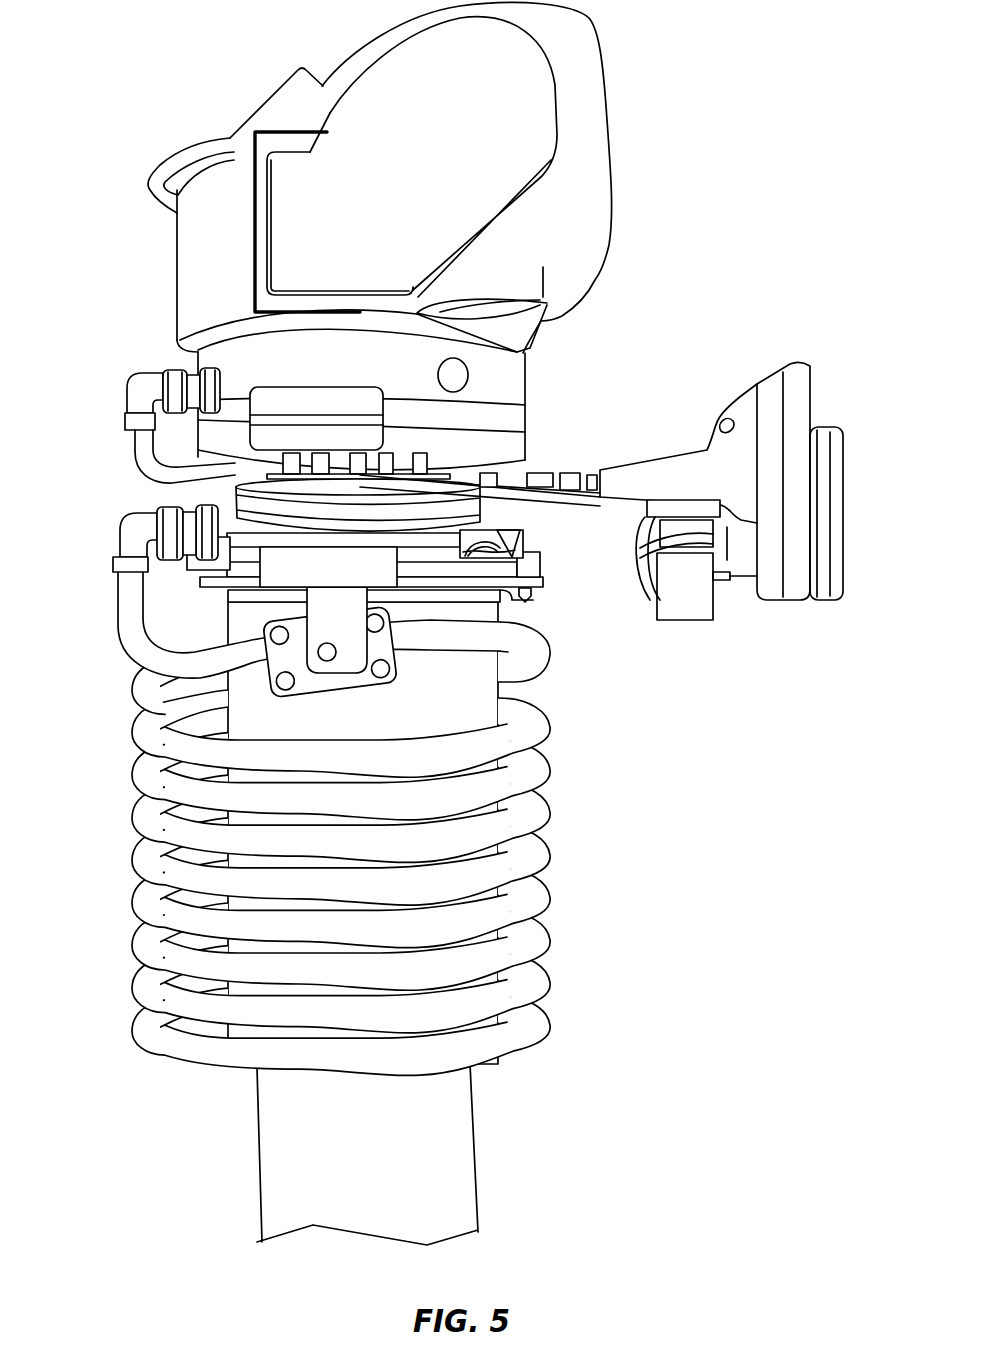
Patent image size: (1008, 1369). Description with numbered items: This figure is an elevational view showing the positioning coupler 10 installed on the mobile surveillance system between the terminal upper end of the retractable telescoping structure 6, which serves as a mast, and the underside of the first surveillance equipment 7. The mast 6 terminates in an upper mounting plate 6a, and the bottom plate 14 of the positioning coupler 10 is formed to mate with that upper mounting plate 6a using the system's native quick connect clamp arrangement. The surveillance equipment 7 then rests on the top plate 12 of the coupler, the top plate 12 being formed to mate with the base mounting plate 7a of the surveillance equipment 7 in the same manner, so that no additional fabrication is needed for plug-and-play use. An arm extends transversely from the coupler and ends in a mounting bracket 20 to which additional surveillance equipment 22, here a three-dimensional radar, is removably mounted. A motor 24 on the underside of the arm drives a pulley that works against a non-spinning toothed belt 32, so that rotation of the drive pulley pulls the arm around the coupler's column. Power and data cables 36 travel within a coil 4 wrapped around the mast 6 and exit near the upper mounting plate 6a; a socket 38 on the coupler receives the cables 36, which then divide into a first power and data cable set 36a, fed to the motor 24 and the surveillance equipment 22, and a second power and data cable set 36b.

The coil 4 is at (550, 648).
The retractable telescoping structure 6 is at (272, 1137).
The upper mounting plate 6a is at (507, 593).
The first surveillance equipment 7 is at (600, 103).
The base mounting plate 7a is at (493, 420).
The positioning coupler 10 is at (620, 442).
The top plate 12 is at (523, 450).
The bottom plate 14 is at (242, 563).
The mounting bracket 20 is at (678, 437).
The surveillance equipment 22 is at (811, 350).
The motor 24 is at (683, 620).
The toothed belt 32 is at (593, 503).
The power and data cables 36 is at (115, 590).
The first power and data cable set 36a is at (503, 537).
The second power and data cable set 36b is at (130, 438).
The socket 38 is at (177, 513).